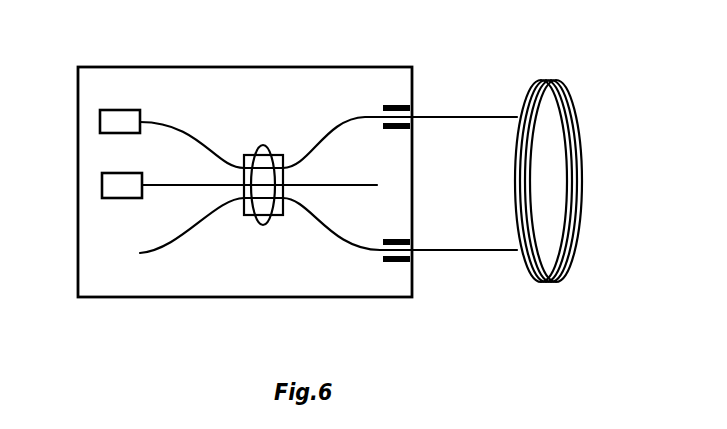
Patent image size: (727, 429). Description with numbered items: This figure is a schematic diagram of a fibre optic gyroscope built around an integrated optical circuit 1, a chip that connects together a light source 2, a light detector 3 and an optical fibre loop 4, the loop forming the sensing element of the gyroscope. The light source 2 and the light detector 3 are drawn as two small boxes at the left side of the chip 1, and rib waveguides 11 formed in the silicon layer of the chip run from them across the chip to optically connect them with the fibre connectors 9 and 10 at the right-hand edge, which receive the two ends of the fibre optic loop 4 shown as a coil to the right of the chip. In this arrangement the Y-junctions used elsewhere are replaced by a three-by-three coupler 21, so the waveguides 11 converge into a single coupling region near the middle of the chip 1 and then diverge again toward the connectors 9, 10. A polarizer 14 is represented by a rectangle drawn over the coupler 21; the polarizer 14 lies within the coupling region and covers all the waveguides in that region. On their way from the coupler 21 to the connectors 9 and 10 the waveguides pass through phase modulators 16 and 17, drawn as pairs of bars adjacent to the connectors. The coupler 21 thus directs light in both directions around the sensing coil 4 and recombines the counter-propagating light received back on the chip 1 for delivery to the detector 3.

The integrated optical circuit 1 is at (322, 268).
The light source 2 is at (105, 188).
The light detector 3 is at (105, 122).
The optical fibre loop 4 is at (585, 146).
The fibre connector 9 is at (413, 117).
The fibre connector 10 is at (413, 251).
The rib waveguides 11 is at (333, 128).
The polarizer 14 is at (250, 216).
The phase modulator 16 is at (396, 104).
The phase modulator 17 is at (396, 263).
The 3×3 coupler 21 is at (249, 146).